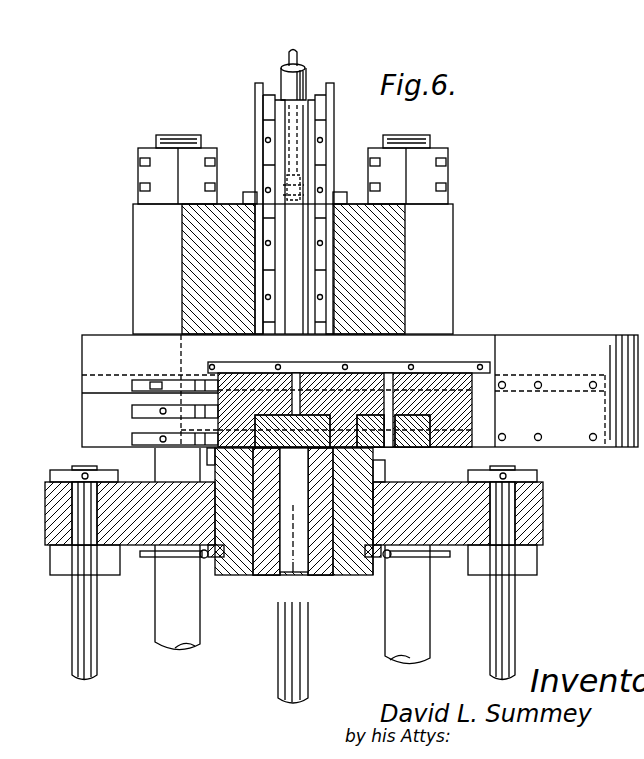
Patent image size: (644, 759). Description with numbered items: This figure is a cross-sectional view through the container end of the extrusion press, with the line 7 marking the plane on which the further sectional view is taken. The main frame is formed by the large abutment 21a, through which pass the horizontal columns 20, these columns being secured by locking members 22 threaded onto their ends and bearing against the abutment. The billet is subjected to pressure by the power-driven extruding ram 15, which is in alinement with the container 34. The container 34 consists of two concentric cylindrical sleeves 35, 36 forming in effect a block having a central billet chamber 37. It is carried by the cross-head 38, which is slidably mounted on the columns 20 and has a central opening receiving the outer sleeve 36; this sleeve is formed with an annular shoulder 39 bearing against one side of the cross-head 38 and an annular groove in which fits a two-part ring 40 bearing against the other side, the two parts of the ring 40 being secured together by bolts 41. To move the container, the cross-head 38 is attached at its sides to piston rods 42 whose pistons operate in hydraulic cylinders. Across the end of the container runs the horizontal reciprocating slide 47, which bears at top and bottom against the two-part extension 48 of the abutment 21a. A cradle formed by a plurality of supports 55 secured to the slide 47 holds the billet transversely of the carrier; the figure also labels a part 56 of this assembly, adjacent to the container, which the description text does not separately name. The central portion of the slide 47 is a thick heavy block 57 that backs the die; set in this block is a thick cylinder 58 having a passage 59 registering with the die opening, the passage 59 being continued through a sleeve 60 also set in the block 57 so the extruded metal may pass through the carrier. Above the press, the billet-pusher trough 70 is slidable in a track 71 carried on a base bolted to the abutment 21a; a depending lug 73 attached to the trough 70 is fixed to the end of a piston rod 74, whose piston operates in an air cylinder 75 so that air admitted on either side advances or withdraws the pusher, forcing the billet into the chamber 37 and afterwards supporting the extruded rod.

The section line 7— 7 is at (293, 14).
The extruding ram 15 is at (308, 662).
The horizontal columns 20 is at (292, 556).
The abutment 21a is at (293, 269).
The locking members 22 is at (293, 169).
The container 34 is at (283, 550).
The inner cylindrical sleeve 35 is at (270, 566).
The outer cylindrical sleeve 36 is at (240, 565).
The billet chamber 37 is at (300, 550).
The cross-head 38 is at (543, 522).
The annular shoulder 39 is at (385, 472).
The two-part ring 40 is at (366, 562).
The bolts 41 is at (198, 556).
The piston rods 42 is at (72, 628).
The reciprocating slide 47 is at (360, 391).
The two-part extension 48 is at (418, 353).
The supports 55 is at (134, 408).
The slot 56 is at (437, 470).
The block 57 is at (452, 390).
The cylinder 58 is at (360, 420).
The passage 59 is at (268, 425).
The sleeve 60 is at (292, 378).
The trough 70 is at (296, 219).
The track 71 is at (262, 152).
The depending lug 73 is at (302, 192).
The piston rod 74 is at (289, 57).
The air cylinder 75 is at (306, 78).